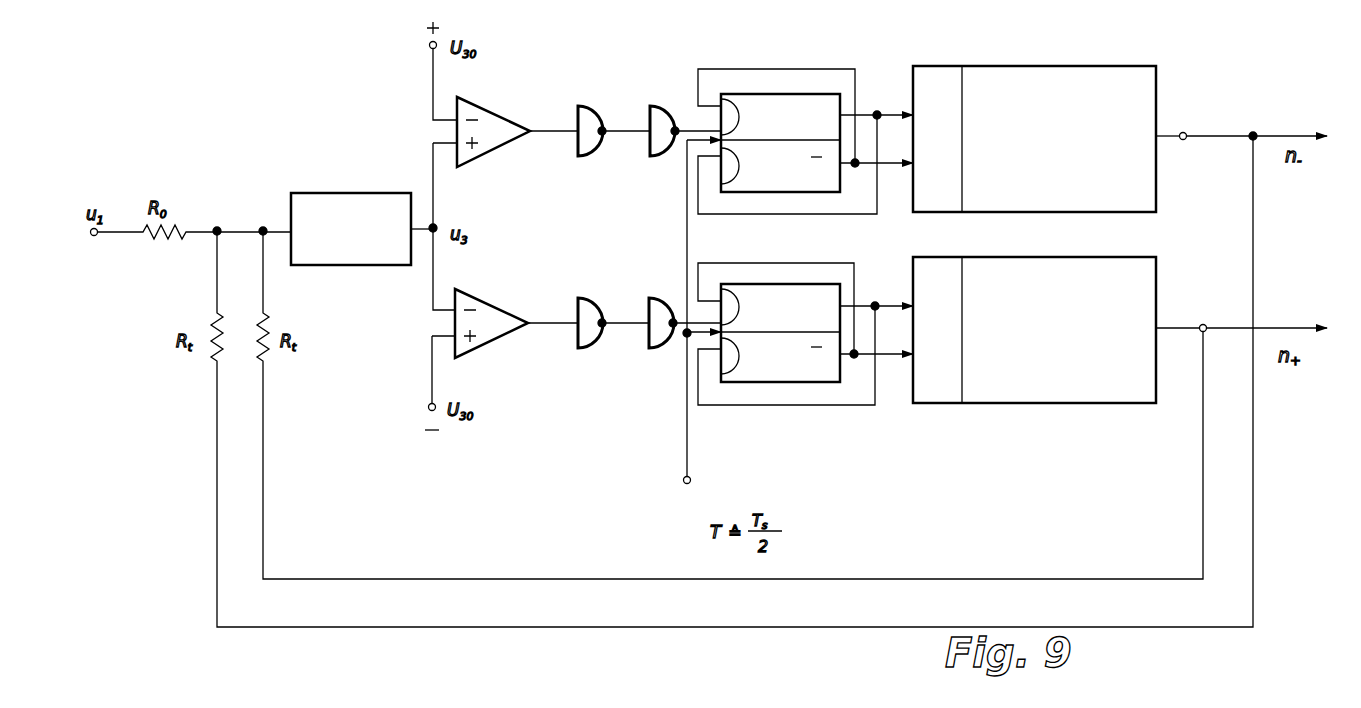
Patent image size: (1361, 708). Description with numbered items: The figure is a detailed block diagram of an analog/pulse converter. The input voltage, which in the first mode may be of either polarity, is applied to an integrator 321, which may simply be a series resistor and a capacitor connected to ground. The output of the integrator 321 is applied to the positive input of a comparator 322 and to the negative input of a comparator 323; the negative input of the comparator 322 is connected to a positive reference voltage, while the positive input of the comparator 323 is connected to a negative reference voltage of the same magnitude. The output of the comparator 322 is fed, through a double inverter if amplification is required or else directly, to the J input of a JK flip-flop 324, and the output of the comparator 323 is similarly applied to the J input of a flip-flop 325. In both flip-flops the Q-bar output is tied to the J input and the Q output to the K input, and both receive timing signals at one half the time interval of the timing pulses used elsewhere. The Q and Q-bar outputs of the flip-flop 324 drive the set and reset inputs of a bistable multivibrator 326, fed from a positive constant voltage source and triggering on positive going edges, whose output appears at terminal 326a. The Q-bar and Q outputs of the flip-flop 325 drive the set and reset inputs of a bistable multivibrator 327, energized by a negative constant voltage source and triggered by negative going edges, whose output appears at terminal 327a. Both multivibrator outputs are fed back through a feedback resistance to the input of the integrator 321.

The integrator 321 is at (336, 204).
The comparator 322 is at (490, 114).
The comparator 323 is at (492, 315).
The JK flip-flop 324 is at (817, 100).
The flip-flop 325 is at (790, 292).
The bistable multivibrator 326 is at (1148, 88).
The output terminal of bistable multivibrator 326 326a is at (1186, 132).
The bistable multivibrator 327 is at (1150, 266).
The output terminal of bistable multivibrator 327 327a is at (1205, 324).